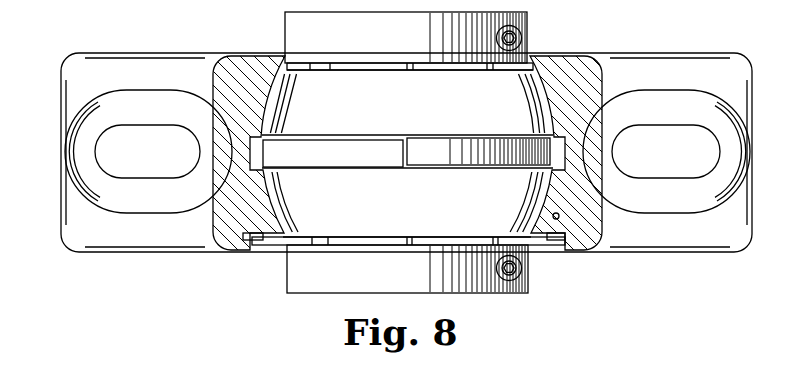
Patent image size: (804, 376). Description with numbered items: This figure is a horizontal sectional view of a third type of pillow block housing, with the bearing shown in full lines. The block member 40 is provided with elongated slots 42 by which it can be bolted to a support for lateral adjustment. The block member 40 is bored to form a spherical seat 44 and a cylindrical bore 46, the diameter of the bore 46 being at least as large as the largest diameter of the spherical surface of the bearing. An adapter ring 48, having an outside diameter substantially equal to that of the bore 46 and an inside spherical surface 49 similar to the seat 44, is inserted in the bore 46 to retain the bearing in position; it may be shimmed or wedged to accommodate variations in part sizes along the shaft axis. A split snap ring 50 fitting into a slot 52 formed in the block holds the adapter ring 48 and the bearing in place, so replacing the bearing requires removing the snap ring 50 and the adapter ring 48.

The block member 40 is at (697, 66).
The elongated slots 42 is at (676, 178).
The spherical seat 44 is at (541, 92).
The cylindrical bore 46 is at (559, 217).
The adapter ring 48 is at (546, 228).
The inside spherical surface 49 is at (543, 216).
The split snap ring 50 is at (276, 232).
The slot 52 is at (247, 236).